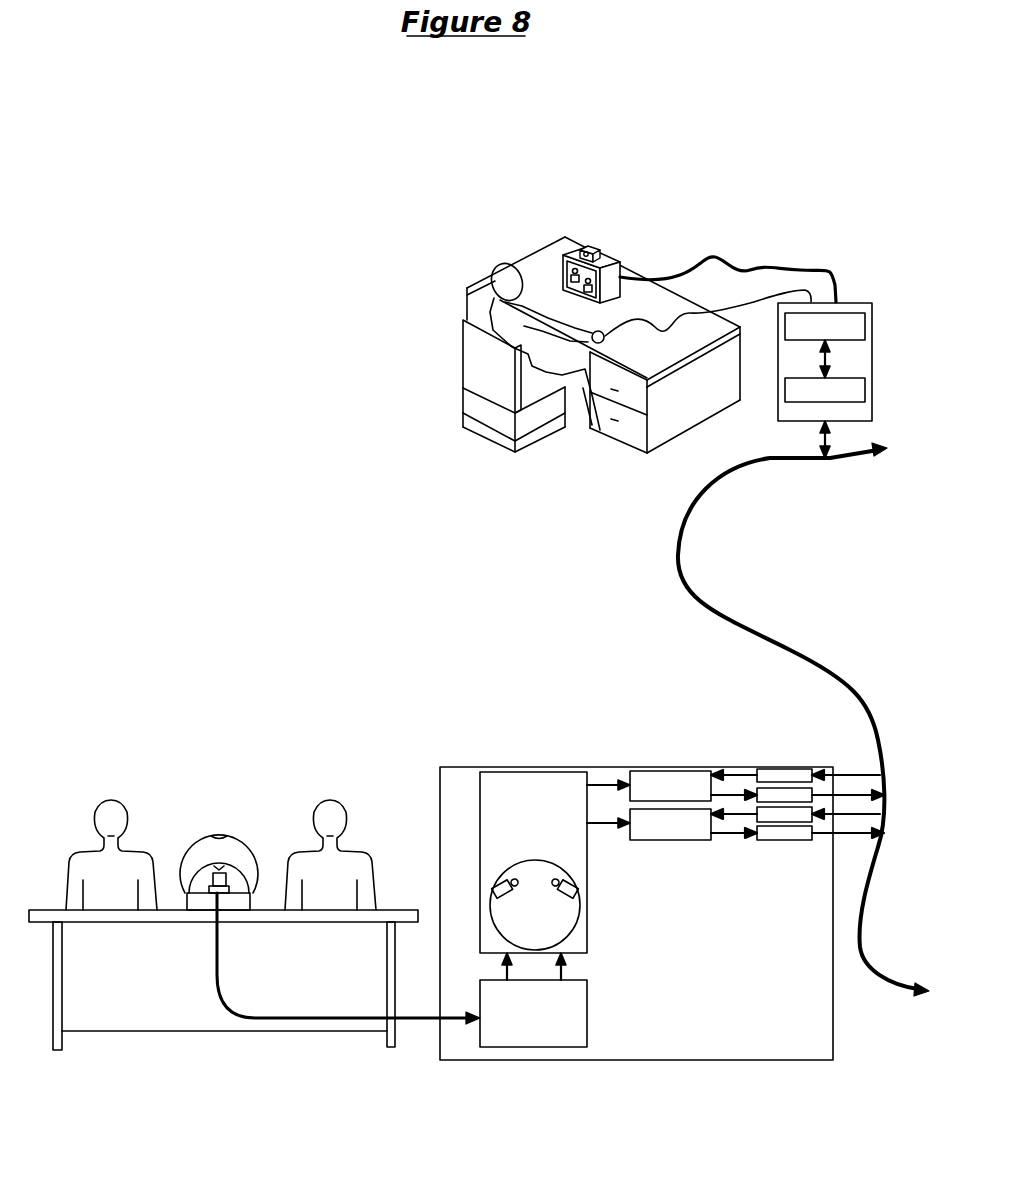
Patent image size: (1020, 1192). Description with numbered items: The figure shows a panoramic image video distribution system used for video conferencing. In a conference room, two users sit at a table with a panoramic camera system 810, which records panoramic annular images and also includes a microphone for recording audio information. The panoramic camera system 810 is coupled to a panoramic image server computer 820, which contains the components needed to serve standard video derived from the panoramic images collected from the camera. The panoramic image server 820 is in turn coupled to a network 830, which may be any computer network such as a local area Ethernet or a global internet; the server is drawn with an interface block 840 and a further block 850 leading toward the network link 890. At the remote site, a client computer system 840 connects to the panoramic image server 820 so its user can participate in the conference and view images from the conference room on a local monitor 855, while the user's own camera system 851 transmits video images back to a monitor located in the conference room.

The panoramic camera system 810 is at (219, 835).
The panoramic image server computer 820 is at (662, 945).
The network 830 is at (533, 862).
The client computer system 840 is at (868, 302).
The receiver interface 850 is at (670, 824).
The camera system 851 is at (599, 246).
The local monitor 855 is at (610, 250).
The network connection 890 is at (679, 548).